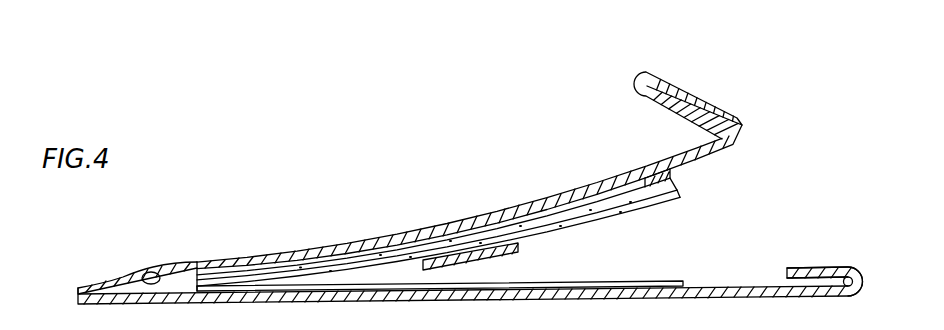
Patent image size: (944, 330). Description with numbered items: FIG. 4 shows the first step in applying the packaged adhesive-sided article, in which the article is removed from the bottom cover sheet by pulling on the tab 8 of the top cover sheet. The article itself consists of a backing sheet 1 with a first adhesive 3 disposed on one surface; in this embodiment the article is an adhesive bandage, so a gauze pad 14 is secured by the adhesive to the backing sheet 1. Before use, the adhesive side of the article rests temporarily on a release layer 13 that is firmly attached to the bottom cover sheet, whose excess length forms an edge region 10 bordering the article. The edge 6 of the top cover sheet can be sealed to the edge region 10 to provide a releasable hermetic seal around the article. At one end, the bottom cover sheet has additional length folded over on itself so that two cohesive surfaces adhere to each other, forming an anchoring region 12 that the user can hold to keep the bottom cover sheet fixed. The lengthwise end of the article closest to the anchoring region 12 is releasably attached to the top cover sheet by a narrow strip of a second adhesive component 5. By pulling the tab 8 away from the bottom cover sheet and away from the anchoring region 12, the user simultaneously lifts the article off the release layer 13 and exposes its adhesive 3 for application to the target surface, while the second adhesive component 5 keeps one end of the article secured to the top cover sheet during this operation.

The backing sheet 1 is at (678, 184).
The first adhesive 3 is at (681, 194).
The second adhesive component 5 is at (672, 172).
The edge of top cover sheet 6 is at (160, 270).
The tab 8 is at (714, 97).
The edge region 10 is at (745, 282).
The anchoring region 12 is at (826, 266).
The release layer 13 is at (690, 282).
The gauze pad 14 is at (519, 246).